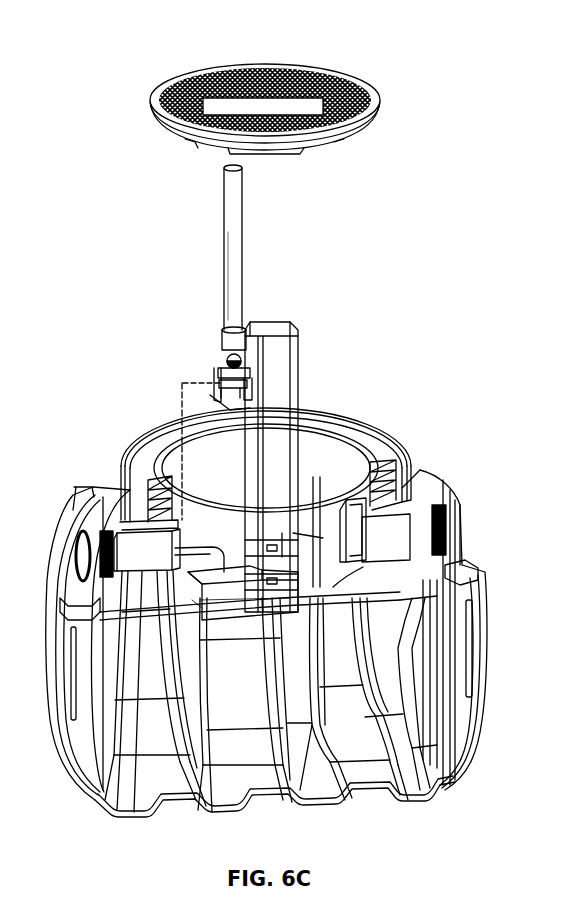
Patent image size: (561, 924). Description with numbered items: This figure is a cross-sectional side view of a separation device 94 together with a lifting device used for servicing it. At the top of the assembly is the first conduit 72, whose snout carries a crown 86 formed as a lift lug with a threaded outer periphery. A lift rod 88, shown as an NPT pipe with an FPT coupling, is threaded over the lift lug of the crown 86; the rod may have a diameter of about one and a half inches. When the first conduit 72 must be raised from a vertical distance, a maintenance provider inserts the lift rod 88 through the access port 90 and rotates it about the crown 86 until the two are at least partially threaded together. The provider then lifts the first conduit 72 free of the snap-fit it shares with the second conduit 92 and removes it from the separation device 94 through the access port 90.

The separation device 94 is at (469, 84).
The lift rod 88 is at (243, 236).
The crown 86 is at (230, 358).
The first conduit 72 is at (303, 331).
The access port 90 is at (314, 437).
The second conduit 92 is at (151, 576).